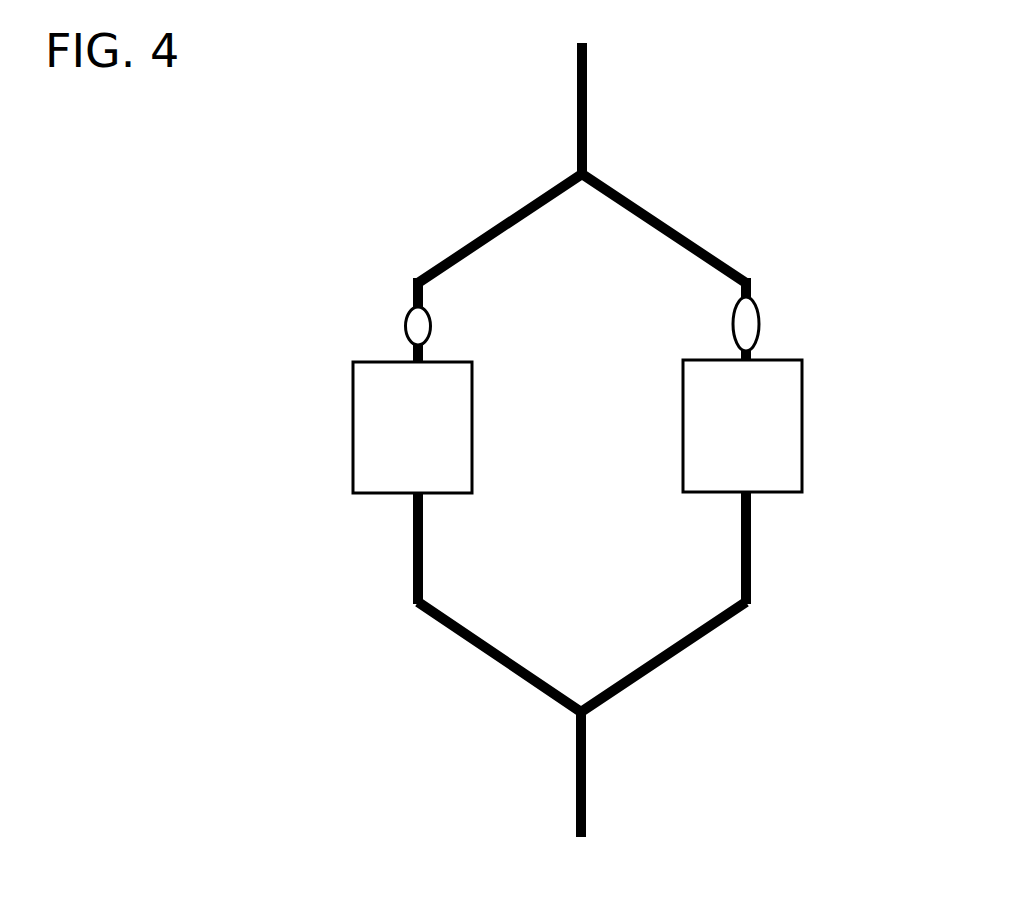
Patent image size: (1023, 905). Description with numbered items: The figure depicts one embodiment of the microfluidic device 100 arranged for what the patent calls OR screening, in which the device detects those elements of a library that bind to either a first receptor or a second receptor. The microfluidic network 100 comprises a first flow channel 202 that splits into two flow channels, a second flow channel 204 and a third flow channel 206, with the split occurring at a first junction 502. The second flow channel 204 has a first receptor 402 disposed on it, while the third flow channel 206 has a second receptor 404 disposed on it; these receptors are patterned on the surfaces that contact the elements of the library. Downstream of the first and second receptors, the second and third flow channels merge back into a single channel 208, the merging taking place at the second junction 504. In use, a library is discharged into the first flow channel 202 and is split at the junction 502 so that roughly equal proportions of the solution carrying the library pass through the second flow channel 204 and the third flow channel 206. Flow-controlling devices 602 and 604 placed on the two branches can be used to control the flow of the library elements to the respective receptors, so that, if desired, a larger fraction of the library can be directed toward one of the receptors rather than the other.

The microfluidic device 100 is at (922, 167).
The first flow channel 202 is at (587, 107).
The second flow channel 204 is at (670, 229).
The third flow channel 206 is at (457, 248).
The single channel 208 is at (575, 777).
The first receptor 402 is at (788, 457).
The second receptor 404 is at (363, 417).
The first junction 502 is at (588, 174).
The second junction 504 is at (585, 713).
The flow-controlling device 602 is at (746, 316).
The flow-controlling device 604 is at (407, 317).